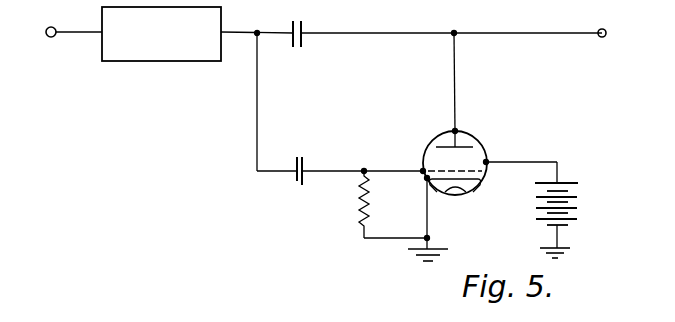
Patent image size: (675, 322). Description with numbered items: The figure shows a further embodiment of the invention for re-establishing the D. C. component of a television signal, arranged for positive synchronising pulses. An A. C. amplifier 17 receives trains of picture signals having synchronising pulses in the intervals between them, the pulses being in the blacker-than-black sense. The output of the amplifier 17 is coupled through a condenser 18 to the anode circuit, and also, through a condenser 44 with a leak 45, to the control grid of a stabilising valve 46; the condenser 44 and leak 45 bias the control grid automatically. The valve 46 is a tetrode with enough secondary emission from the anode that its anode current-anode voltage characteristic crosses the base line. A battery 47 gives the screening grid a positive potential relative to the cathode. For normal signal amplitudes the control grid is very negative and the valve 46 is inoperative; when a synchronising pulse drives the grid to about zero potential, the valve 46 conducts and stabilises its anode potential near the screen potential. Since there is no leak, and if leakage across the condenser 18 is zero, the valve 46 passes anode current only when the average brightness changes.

The A. C. amplifier 17 is at (168, 52).
The condenser 18 is at (303, 25).
The condenser 44 is at (295, 181).
The leak 45 is at (357, 201).
The stabilising valve 46 is at (483, 143).
The battery 47 is at (567, 201).